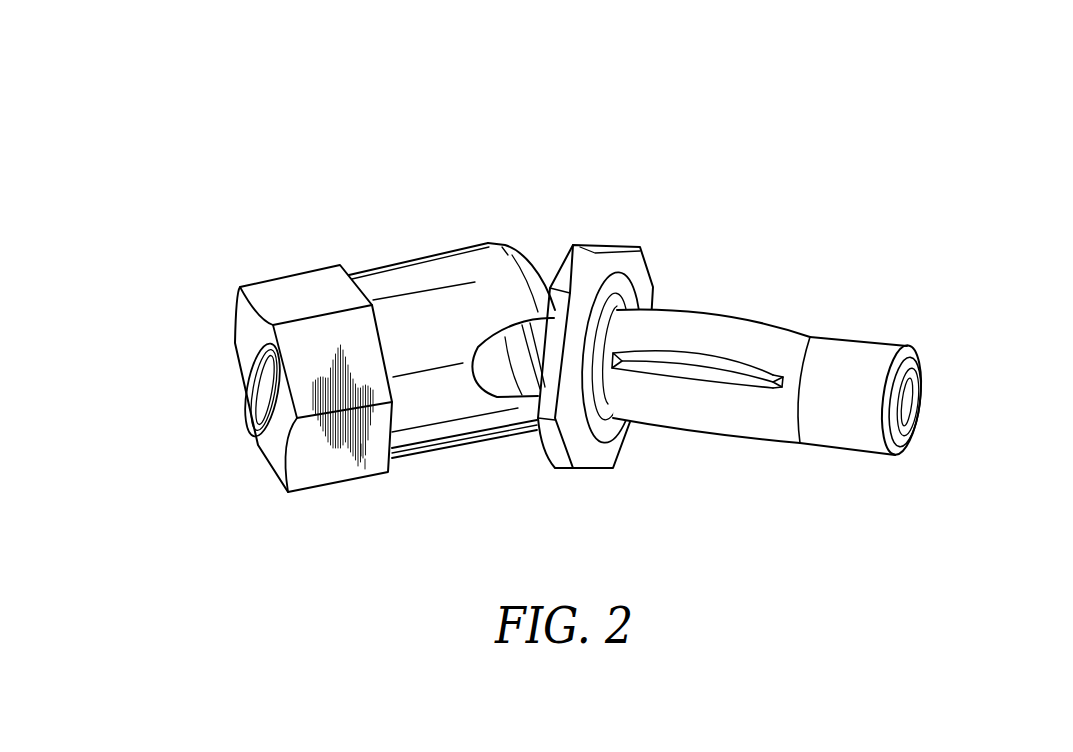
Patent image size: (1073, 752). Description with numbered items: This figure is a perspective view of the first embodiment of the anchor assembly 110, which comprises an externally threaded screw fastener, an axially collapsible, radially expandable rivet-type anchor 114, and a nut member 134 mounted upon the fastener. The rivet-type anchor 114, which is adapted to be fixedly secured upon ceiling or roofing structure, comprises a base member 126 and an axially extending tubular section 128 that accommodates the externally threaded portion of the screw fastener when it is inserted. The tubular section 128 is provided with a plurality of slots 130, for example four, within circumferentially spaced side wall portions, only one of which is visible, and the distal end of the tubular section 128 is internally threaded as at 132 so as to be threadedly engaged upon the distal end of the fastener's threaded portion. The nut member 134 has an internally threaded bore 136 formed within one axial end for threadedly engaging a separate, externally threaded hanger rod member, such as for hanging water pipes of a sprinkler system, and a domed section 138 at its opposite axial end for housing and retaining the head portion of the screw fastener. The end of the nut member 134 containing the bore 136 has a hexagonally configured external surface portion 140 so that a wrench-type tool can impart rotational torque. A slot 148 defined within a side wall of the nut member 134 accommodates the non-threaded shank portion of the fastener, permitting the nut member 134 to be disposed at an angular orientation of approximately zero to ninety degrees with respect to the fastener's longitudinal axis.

The anchor assembly 110 is at (803, 176).
The rivet-type anchor 114 is at (840, 338).
The base member 126 is at (617, 247).
The axially extending tubular section 128 is at (713, 328).
The slots 130 is at (743, 380).
The internally threaded distal end portion 132 is at (907, 404).
The nut member 134 is at (432, 288).
The internally threaded bore 136 is at (260, 389).
The domed section 138 is at (537, 262).
The hexagonally configured external surface portion 140 is at (328, 345).
The slot 148 is at (495, 393).